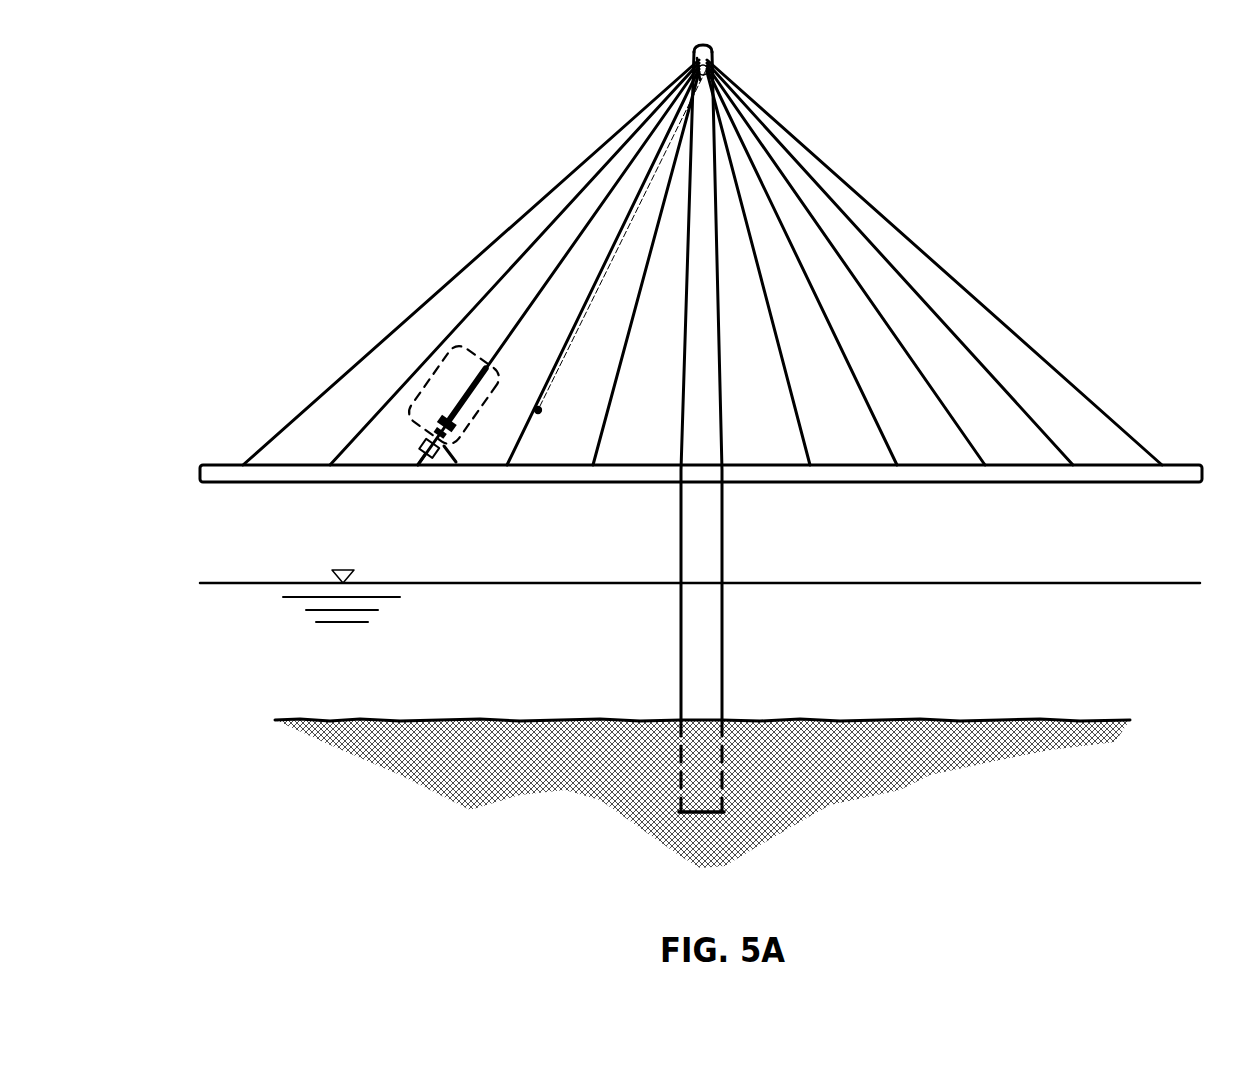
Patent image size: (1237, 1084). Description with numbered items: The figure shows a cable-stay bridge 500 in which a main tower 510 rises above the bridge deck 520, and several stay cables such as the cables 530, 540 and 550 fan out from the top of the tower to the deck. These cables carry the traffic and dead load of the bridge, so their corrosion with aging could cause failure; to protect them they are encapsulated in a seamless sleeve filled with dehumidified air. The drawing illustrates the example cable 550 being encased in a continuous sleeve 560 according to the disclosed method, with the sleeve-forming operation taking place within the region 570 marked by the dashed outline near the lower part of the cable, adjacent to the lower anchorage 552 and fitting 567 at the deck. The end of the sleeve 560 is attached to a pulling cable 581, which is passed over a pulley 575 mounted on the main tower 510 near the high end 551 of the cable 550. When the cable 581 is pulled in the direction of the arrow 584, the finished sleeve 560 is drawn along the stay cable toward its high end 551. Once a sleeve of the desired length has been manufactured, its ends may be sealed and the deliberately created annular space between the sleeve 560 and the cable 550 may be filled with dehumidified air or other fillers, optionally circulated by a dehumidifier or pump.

The cable-stay bridge 500 is at (985, 166).
The main tower 510 is at (709, 552).
The bridge deck 520 is at (945, 475).
The cable 530 is at (968, 290).
The cable 540 is at (925, 382).
The cable 550 is at (537, 292).
The high end 551 is at (676, 90).
The lower cable anchorage 552 is at (425, 450).
The sleeve 560 is at (460, 393).
The anchor fitting 567 is at (451, 462).
The region 570 is at (393, 418).
The pulley 575 is at (712, 60).
The cable 581 is at (588, 233).
The arrow 584 is at (621, 258).